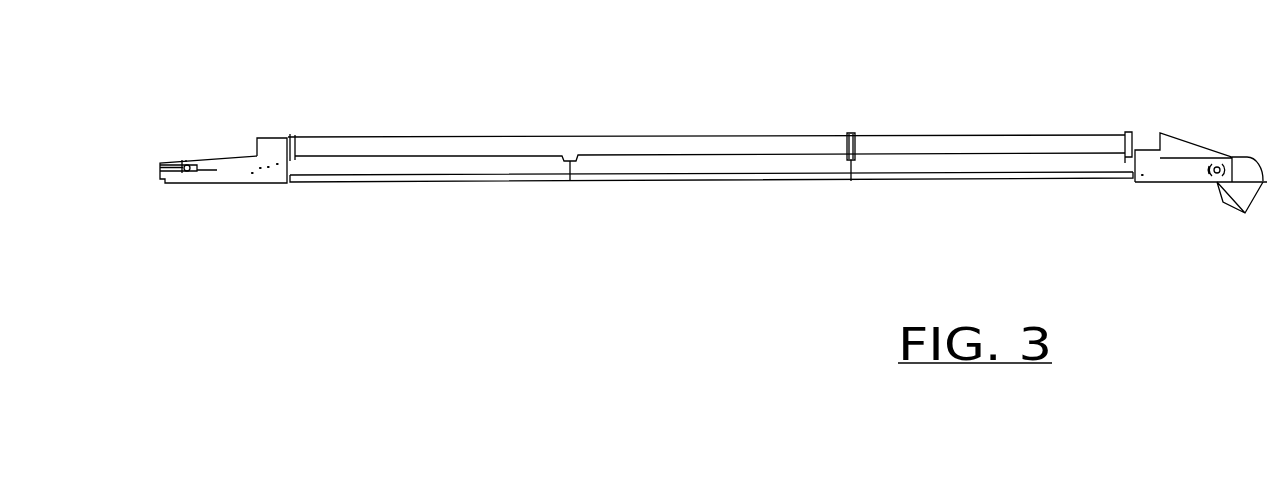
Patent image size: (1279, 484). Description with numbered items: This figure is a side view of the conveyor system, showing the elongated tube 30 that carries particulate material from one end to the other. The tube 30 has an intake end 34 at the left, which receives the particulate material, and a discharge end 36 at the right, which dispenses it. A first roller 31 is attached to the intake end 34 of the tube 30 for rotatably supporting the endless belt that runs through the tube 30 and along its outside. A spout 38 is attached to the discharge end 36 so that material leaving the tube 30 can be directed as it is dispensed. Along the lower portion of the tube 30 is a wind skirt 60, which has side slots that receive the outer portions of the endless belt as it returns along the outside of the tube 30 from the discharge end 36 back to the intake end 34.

The tube 30 is at (469, 152).
The first roller 31 is at (190, 168).
The intake end 34 is at (257, 150).
The discharge end 36 is at (1145, 140).
The spout 38 is at (1235, 213).
The wind skirt 60 is at (680, 170).